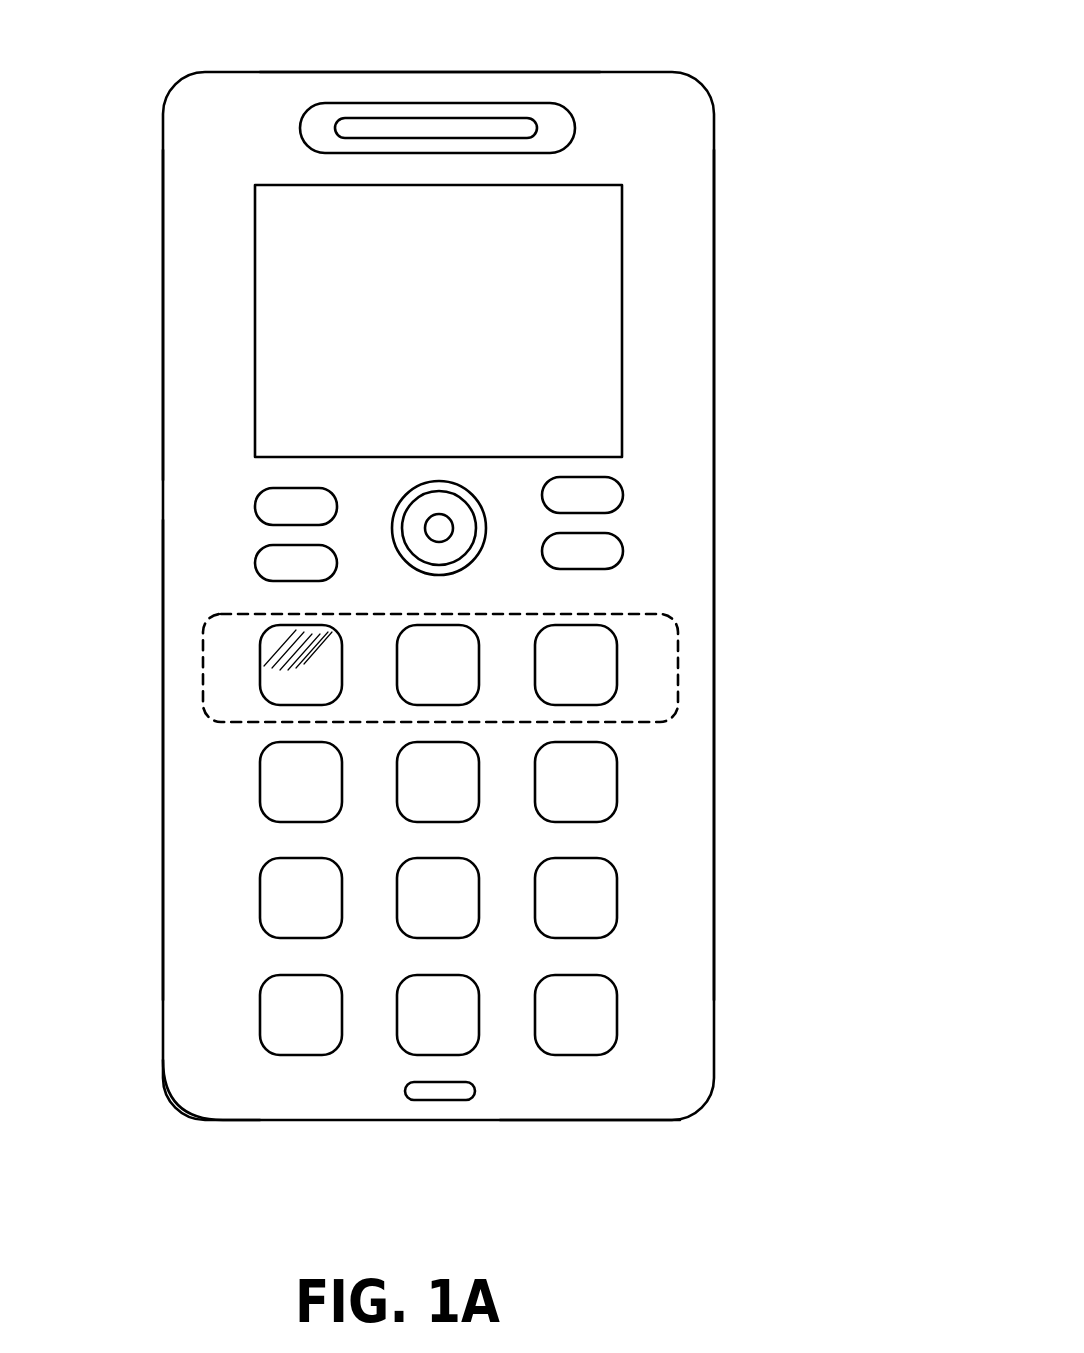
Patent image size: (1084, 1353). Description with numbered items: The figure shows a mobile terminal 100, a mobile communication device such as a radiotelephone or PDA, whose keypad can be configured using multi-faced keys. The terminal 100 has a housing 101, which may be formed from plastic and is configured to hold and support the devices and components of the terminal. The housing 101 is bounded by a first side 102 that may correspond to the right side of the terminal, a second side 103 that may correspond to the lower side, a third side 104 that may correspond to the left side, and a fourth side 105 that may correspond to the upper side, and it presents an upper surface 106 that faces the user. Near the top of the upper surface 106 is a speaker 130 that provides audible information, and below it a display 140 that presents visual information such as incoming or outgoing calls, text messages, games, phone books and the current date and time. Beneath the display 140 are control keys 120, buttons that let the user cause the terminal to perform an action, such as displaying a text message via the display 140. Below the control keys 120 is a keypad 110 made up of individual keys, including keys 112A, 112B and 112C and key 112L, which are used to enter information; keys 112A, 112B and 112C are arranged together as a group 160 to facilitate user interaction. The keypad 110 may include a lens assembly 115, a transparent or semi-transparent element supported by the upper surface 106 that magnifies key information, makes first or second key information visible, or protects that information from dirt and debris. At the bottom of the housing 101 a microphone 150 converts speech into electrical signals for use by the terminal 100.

The mobile terminal 100 is at (438, 567).
The housing 101 is at (121, 760).
The first side 102 is at (768, 533).
The second side 103 is at (590, 1161).
The third side 104 is at (152, 1087).
The fourth side 105 is at (509, 44).
The upper surface 106 is at (116, 315).
The keypad 110 is at (608, 839).
The key 112A is at (340, 638).
The key 112B is at (466, 638).
The key 112C is at (606, 642).
The key 112L is at (617, 989).
The lens assembly 115 is at (260, 671).
The control keys 120 is at (608, 523).
The speaker 130 is at (489, 119).
The display 140 is at (438, 321).
The microphone 150 is at (387, 1095).
The group 160 is at (426, 635).